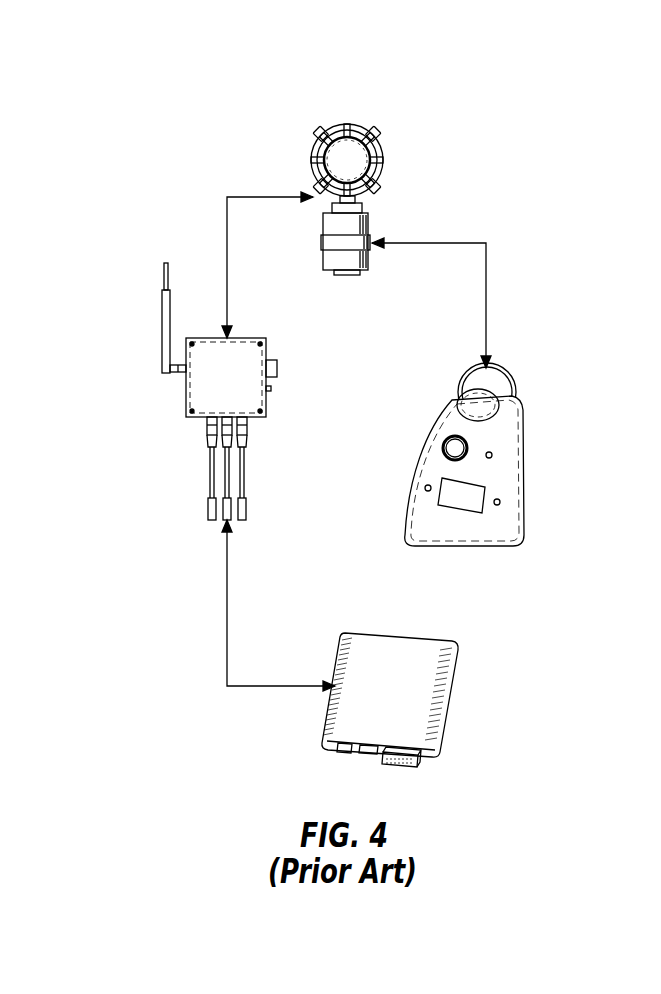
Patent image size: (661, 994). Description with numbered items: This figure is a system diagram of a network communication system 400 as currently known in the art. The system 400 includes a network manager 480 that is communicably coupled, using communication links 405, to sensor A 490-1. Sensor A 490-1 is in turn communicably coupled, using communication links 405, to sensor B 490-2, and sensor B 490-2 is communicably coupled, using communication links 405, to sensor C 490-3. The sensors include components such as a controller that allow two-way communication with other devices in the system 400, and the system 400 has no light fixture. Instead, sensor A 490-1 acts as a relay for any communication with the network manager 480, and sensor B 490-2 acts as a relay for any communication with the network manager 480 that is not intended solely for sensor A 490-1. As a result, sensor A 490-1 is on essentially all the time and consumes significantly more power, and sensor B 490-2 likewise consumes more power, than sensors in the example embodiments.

The network communication system 400 is at (427, 100).
The communication links 405 is at (227, 242).
The network manager 480 is at (338, 668).
The sensor A 490-1 is at (266, 405).
The sensor B 490-2 is at (308, 163).
The sensor C 490-3 is at (412, 490).